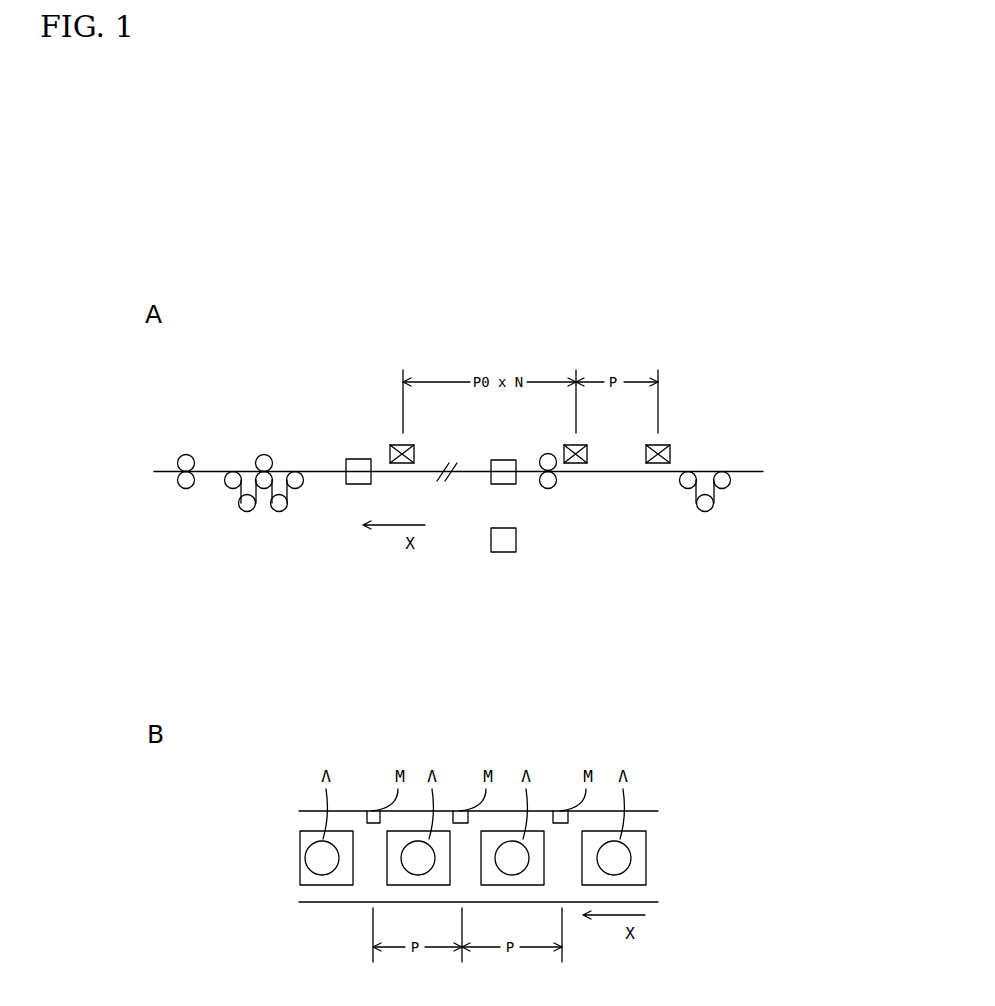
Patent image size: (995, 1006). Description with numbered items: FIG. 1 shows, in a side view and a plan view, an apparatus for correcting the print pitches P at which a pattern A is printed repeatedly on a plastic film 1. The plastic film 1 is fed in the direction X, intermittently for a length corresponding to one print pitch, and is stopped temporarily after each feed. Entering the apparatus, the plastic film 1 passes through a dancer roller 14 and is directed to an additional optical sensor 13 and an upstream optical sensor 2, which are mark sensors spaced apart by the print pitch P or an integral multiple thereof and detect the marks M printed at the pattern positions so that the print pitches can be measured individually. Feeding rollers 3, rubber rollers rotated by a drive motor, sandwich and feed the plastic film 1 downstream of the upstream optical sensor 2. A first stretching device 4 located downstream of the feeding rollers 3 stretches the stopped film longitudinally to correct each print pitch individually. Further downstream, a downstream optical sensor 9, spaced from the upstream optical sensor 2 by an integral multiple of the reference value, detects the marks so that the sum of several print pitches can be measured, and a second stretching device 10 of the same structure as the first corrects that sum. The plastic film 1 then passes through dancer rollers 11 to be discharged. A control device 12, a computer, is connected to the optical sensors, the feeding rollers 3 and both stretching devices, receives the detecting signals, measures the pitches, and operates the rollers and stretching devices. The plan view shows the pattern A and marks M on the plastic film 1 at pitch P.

The plastic film 1 is at (603, 473).
The upstream optical sensor 2 is at (588, 457).
The feeding rollers 3 is at (540, 458).
The first stretching device 4 is at (500, 460).
The downstream optical sensor 9 is at (390, 455).
The second stretching device 10 is at (346, 467).
The dancer rollers 11 is at (242, 510).
The control device 12 is at (517, 538).
The additional optical sensor 13 is at (672, 453).
The dancer roller 14 is at (703, 512).